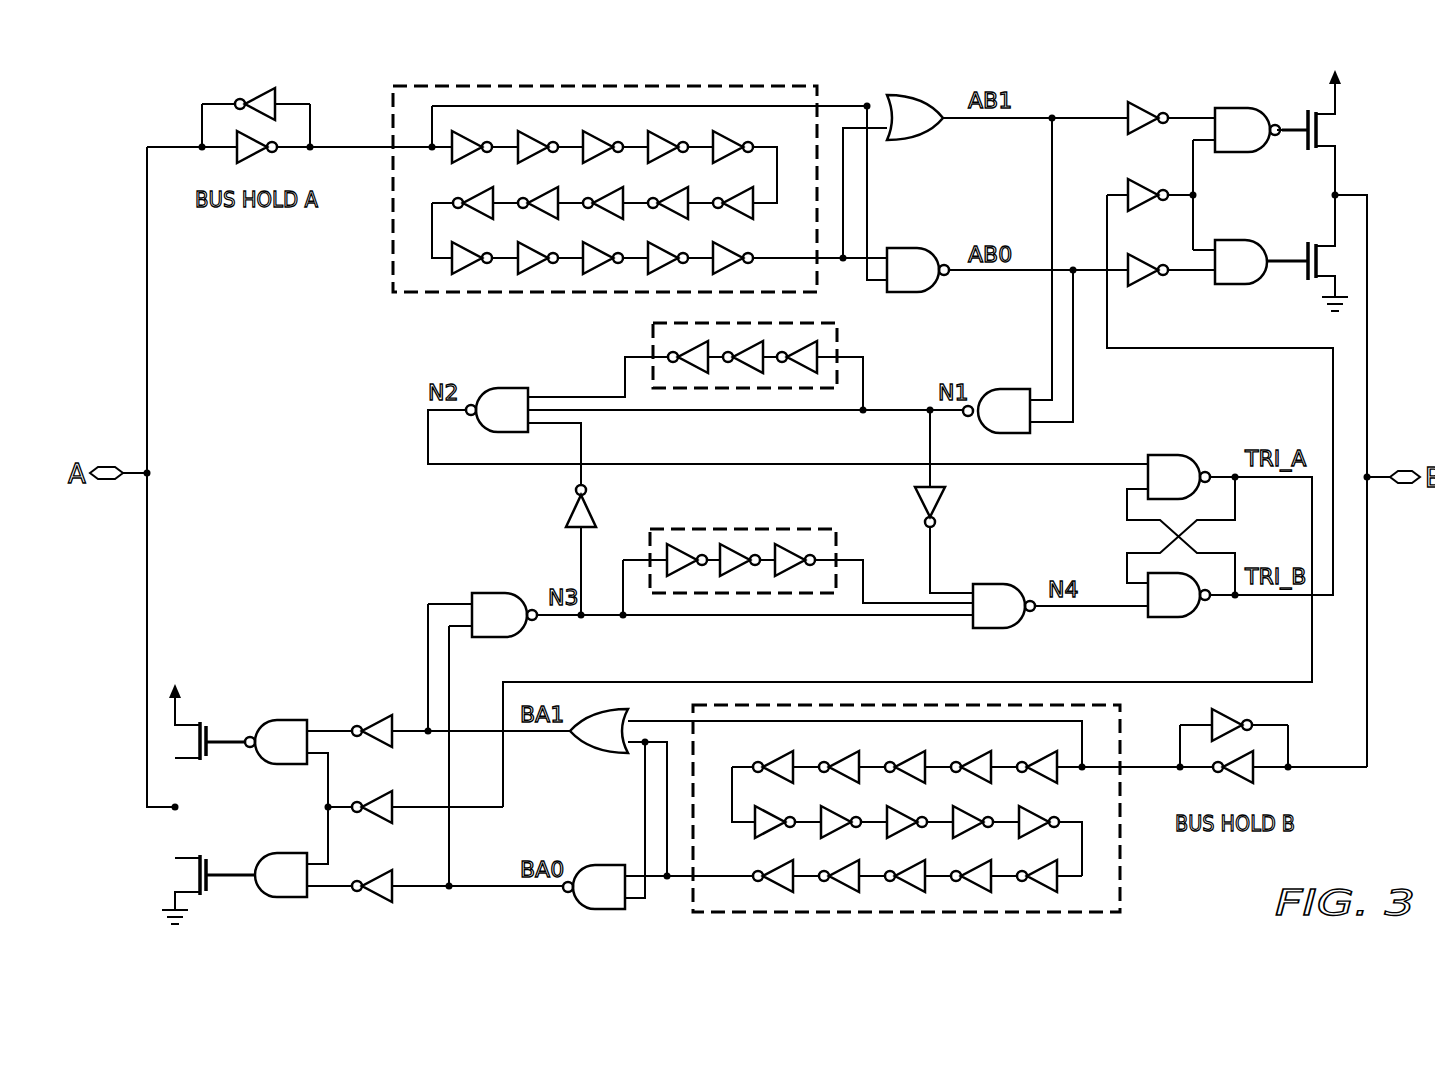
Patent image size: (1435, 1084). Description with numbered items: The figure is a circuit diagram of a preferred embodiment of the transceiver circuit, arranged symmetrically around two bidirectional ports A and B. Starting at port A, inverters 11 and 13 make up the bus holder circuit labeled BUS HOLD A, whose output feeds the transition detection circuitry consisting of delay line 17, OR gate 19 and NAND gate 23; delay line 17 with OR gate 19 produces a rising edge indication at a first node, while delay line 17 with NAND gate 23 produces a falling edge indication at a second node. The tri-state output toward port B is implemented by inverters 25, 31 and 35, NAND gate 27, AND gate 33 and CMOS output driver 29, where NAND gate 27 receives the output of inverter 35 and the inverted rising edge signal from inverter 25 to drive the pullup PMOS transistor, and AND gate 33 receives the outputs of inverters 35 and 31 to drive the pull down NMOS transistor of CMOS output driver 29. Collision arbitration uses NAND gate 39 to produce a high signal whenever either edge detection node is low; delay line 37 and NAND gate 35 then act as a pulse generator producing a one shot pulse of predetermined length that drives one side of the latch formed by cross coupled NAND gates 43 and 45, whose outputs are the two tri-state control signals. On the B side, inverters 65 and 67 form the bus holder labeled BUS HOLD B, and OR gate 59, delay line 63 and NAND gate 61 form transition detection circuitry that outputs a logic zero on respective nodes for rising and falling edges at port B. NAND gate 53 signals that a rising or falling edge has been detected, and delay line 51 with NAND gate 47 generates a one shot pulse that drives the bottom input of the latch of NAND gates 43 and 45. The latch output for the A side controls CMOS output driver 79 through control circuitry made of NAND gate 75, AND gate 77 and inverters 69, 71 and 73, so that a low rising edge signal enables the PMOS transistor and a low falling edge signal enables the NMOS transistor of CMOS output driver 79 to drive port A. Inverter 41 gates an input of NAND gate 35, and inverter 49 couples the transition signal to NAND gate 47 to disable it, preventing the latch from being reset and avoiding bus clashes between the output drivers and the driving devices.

The inverter 11 is at (285, 96).
The inverter 13 is at (232, 157).
The delay line 17 is at (378, 270).
The OR gate 19 is at (907, 148).
The NAND gate 23 is at (903, 247).
The inverter 25 is at (1125, 110).
The NAND gate 27 is at (1250, 153).
The CMOS output driver 29 is at (1340, 172).
The inverter 31 is at (1152, 284).
The AND gate 33 is at (1248, 285).
The NAND gate 35 is at (1125, 188).
The delay line 37 is at (848, 335).
The NAND gate 39 is at (1010, 389).
The inverter 41 is at (567, 515).
The NAND gate 43 is at (1168, 455).
The NAND gate 45 is at (1168, 618).
The NAND gate 47 is at (1005, 584).
The inverter 49 is at (941, 505).
The delay line 51 is at (850, 538).
The NAND gate 53 is at (490, 593).
The OR gate 59 is at (605, 758).
The NAND gate 61 is at (605, 865).
The delay line 63 is at (1146, 873).
The inverter 65 is at (1212, 717).
The inverter 67 is at (1262, 780).
The inverter 69 is at (380, 718).
The inverter 71 is at (380, 793).
The inverter 73 is at (380, 872).
The NAND gate 75 is at (288, 720).
The AND gate 77 is at (288, 853).
The CMOS output driver 79 is at (175, 830).